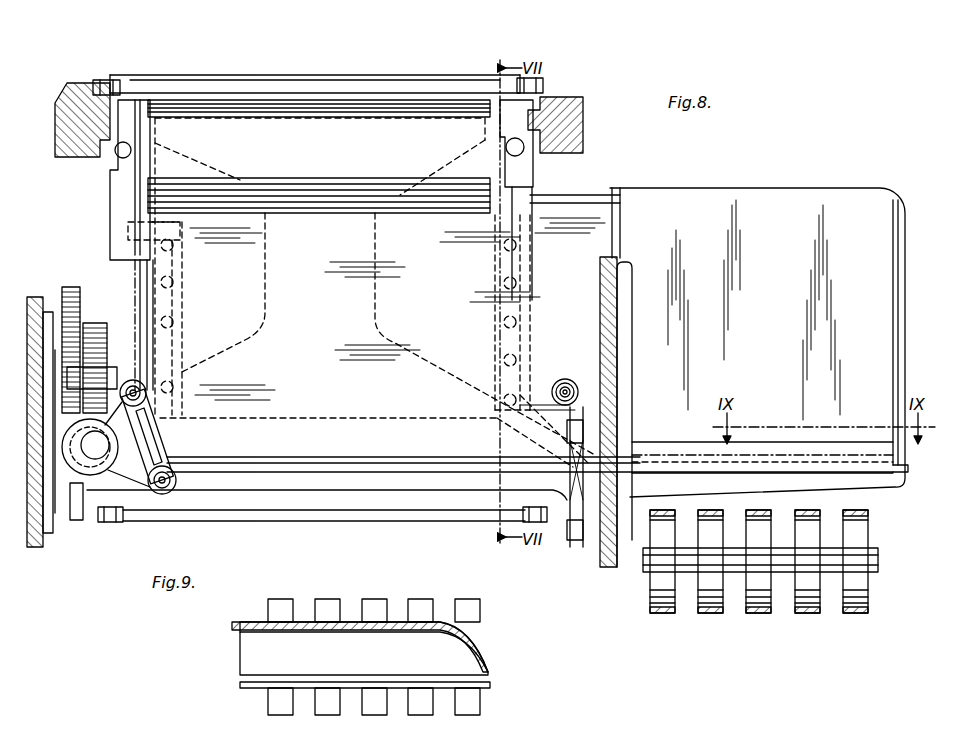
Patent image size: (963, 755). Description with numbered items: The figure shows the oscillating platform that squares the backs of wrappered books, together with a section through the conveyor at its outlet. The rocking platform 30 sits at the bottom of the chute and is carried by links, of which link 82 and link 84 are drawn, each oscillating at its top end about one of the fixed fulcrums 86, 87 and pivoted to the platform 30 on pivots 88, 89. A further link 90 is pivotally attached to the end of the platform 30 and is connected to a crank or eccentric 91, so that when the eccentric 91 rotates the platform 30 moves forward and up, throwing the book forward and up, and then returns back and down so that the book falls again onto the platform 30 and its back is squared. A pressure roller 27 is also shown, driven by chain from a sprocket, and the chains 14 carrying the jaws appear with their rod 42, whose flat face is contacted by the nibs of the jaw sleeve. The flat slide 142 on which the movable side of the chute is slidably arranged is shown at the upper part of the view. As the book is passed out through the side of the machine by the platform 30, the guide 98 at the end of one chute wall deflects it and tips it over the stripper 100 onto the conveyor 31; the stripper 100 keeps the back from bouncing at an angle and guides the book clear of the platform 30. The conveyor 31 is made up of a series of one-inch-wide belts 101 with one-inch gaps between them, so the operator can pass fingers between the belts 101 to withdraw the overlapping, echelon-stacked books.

In FIG. 8, the chains 14 is at (108, 80).
In FIG. 8, the flat slide 142 is at (68, 90).
In FIG. 8, the rod 42 is at (282, 77).
In FIG. 8, the pressure roller 27 is at (380, 115).
In FIG. 8, the rocking platform 30 is at (300, 477).
In FIG. 8, the conveyor 31 is at (856, 527).
In FIG. 9, the conveyor 31 is at (445, 608).
In FIG. 8, the link 82 is at (165, 432).
In FIG. 8, the link 84 is at (618, 425).
In FIG. 8, the fixed fulcrum 86 is at (143, 388).
In FIG. 8, the fixed fulcrum 87 is at (566, 379).
In FIG. 8, the pivot 88 is at (170, 487).
In FIG. 8, the pivot 89 is at (582, 482).
In FIG. 8, the link 90 is at (150, 492).
In FIG. 8, the crank or eccentric 91 is at (85, 516).
In FIG. 8, the guide 98 is at (893, 307).
In FIG. 9, the guide 98 is at (484, 642).
In FIG. 9, the stripper 100 is at (480, 688).
In FIG. 9, the belts 101 is at (272, 612).